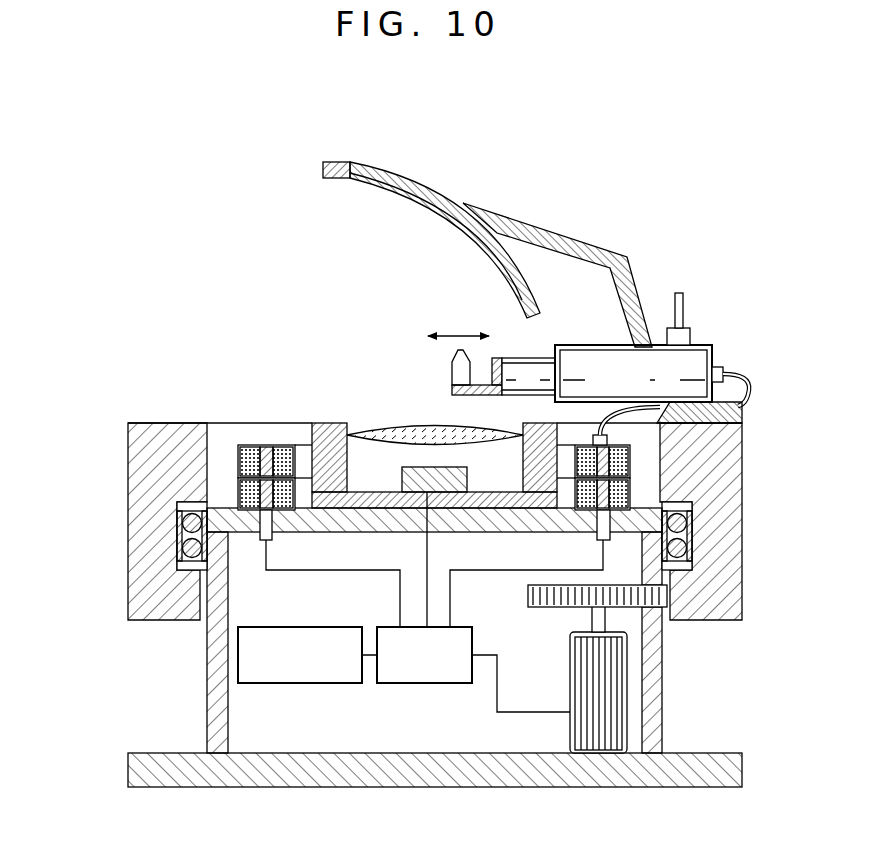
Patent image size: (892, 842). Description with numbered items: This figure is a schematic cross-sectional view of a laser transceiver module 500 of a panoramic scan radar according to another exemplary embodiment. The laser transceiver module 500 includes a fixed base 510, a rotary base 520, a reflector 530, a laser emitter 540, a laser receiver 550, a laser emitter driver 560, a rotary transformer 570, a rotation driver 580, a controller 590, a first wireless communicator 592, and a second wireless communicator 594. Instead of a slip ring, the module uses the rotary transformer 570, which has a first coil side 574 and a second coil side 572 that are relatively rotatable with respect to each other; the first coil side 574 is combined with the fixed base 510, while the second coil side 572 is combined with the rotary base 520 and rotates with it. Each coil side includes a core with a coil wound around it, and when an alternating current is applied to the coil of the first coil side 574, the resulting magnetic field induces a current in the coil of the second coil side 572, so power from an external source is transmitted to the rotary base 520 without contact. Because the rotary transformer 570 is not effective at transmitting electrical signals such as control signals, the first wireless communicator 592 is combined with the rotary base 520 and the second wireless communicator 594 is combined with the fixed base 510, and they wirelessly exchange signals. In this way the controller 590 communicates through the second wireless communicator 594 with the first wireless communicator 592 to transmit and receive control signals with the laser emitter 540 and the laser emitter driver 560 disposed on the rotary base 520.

The laser transceiver module 500 is at (185, 171).
The fixed base 510 is at (208, 677).
The rotary base 520 is at (735, 470).
The reflector 530 is at (345, 160).
The laser emitter 540 is at (455, 370).
The laser receiver 550 is at (360, 416).
The laser emitter driver 560 is at (702, 358).
The rotary transformer 570 is at (341, 517).
The second coil side 572 is at (240, 457).
The first coil side 574 is at (240, 490).
The rotation driver 580 is at (617, 680).
The controller 590 is at (437, 683).
The first wireless communicator 592 is at (685, 335).
The second wireless communicator 594 is at (300, 683).